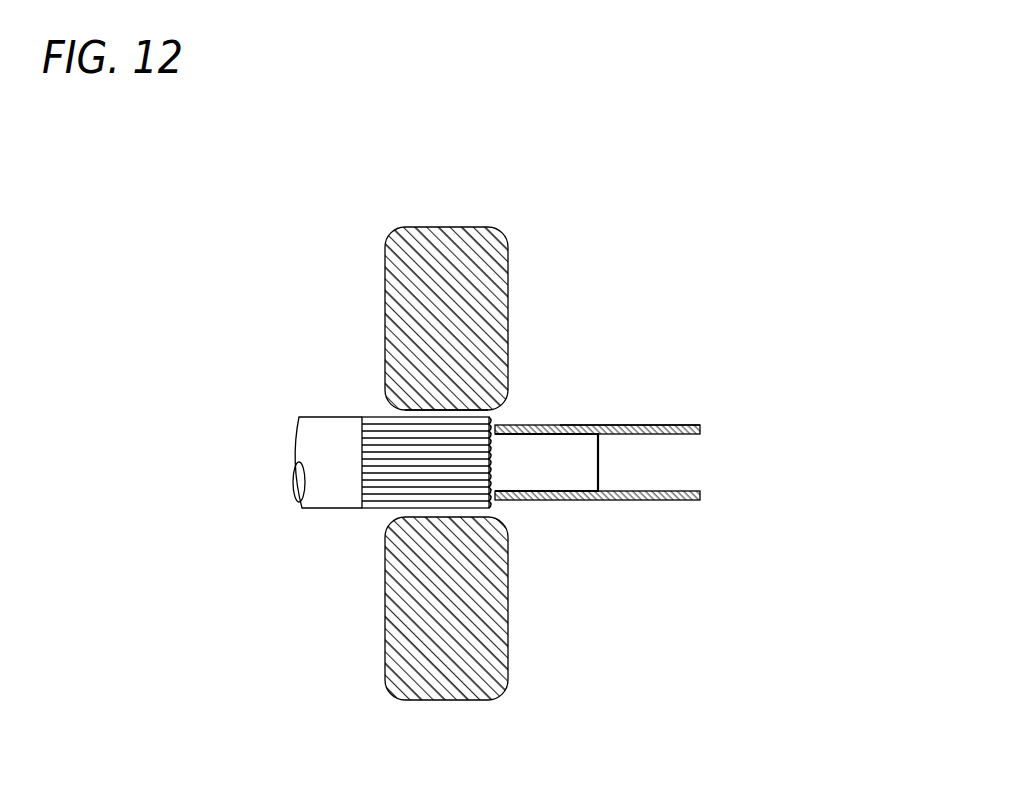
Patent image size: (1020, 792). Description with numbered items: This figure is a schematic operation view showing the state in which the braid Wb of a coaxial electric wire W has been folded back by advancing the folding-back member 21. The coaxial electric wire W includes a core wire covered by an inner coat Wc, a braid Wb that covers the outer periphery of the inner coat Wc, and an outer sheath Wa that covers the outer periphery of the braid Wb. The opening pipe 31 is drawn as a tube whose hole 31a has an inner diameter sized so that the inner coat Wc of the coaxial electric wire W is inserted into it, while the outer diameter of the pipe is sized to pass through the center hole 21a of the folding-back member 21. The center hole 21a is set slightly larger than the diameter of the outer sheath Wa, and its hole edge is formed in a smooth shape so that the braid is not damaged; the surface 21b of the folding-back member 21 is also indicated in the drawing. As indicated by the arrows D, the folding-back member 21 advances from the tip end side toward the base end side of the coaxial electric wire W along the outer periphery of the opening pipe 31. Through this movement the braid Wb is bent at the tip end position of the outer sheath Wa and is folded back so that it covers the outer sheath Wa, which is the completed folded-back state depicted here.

The folding-back member 21 is at (384, 257).
The center hole 21a is at (424, 546).
The pressing surface 21b is at (369, 412).
The coaxial electric wire W is at (384, 461).
The outer sheath Wa is at (312, 511).
The braid Wb is at (378, 511).
The inner coat Wc is at (577, 484).
The opening pipe 31 is at (622, 425).
The hole 31a is at (655, 435).
The arrows D is at (572, 333).